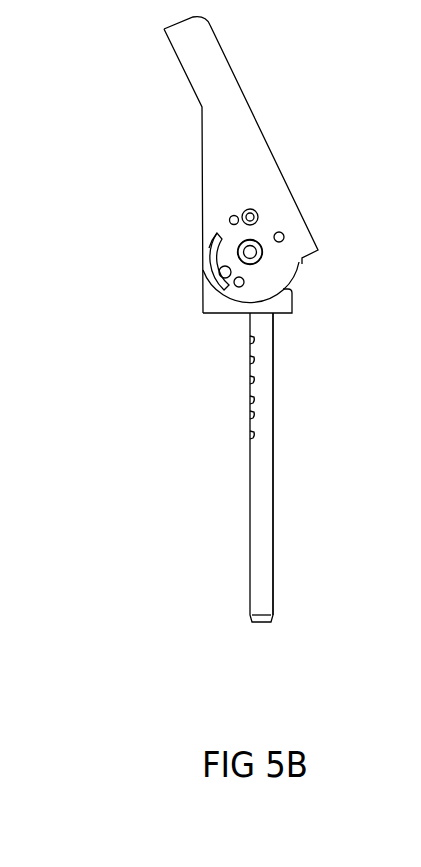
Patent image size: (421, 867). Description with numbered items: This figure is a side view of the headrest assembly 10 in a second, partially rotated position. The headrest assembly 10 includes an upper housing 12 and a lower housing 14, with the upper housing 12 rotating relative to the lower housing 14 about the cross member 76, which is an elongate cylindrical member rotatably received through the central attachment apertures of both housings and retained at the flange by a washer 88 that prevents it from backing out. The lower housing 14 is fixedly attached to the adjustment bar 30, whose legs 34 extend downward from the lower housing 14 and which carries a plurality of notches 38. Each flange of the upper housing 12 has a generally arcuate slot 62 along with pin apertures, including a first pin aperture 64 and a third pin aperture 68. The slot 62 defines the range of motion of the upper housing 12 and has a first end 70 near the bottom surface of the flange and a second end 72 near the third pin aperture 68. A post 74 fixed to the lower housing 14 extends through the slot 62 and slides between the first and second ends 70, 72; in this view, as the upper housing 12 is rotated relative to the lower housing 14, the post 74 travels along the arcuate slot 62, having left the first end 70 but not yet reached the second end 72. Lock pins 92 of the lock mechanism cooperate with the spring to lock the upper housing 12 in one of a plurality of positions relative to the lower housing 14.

The headrest assembly 10 is at (132, 60).
The upper housing 12 is at (258, 127).
The lower housing 14 is at (302, 302).
The adjustment bar 30 is at (275, 492).
The legs 34 is at (268, 387).
The notches 38 is at (253, 379).
The slot 62 is at (215, 255).
The first pin aperture 64 is at (284, 237).
The third pin aperture 68 is at (231, 217).
The first end 70 is at (239, 288).
The second end 72 is at (217, 232).
The post 74 is at (224, 279).
The cross member 76 is at (263, 257).
The washer 88 is at (256, 243).
The lock pins 92 is at (245, 212).